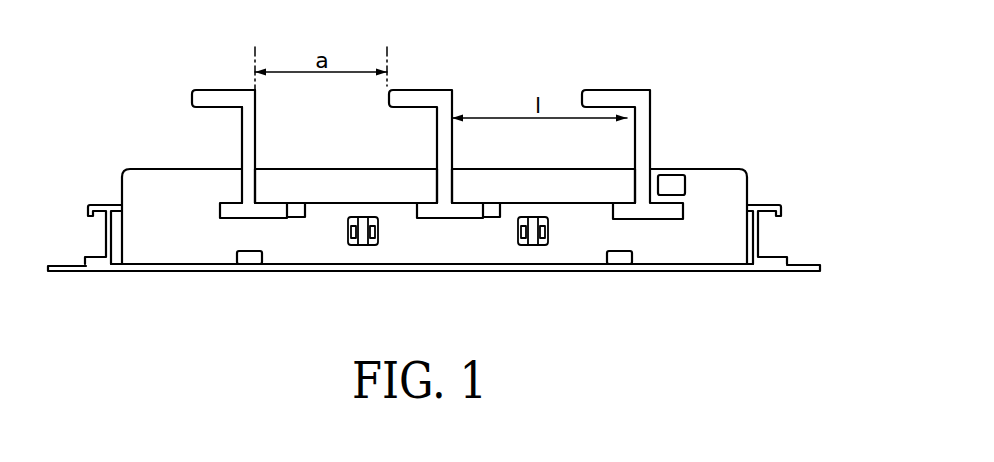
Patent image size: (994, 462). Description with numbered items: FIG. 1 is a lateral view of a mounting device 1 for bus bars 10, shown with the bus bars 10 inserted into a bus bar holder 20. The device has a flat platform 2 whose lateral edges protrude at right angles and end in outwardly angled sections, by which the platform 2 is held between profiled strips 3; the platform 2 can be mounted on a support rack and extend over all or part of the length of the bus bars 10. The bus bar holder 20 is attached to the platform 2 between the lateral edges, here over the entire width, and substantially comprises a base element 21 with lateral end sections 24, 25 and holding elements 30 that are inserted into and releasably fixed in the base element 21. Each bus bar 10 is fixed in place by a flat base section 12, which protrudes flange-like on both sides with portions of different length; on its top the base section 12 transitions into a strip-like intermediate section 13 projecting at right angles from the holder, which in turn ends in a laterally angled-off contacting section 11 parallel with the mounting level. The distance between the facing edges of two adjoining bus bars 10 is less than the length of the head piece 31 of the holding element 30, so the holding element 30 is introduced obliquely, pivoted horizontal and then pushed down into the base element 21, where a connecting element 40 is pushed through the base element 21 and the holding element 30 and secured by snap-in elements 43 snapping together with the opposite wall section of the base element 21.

The mounting device 1 is at (124, 283).
The platform 2 is at (167, 267).
The profiled strips 3 is at (73, 264).
The bus bar 10 is at (237, 194).
The contacting section 11 is at (197, 100).
The base section 12 is at (277, 214).
The intermediate section 13 is at (243, 133).
The bus bar holder 20 is at (697, 178).
The base element 21 is at (436, 217).
The end section 24 is at (735, 187).
The end section 25 is at (133, 183).
The holding element 30 is at (347, 178).
The head piece 31 is at (292, 182).
The connecting element 40 is at (485, 272).
The snap-in elements 43 is at (548, 233).